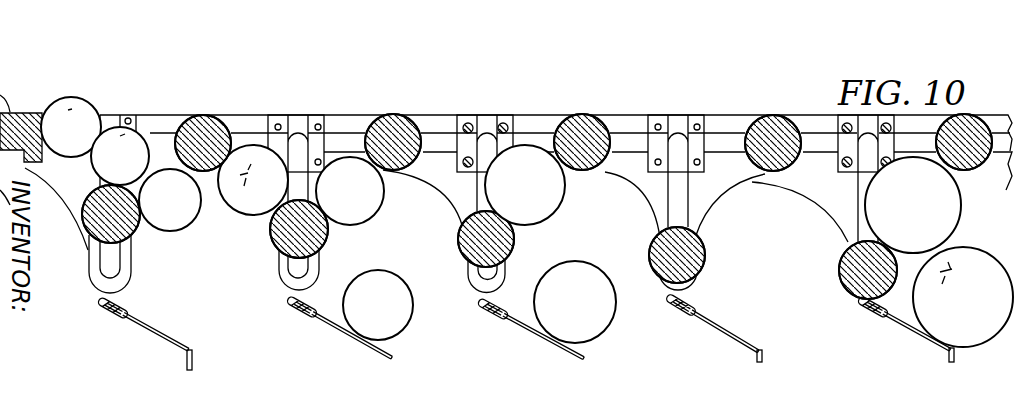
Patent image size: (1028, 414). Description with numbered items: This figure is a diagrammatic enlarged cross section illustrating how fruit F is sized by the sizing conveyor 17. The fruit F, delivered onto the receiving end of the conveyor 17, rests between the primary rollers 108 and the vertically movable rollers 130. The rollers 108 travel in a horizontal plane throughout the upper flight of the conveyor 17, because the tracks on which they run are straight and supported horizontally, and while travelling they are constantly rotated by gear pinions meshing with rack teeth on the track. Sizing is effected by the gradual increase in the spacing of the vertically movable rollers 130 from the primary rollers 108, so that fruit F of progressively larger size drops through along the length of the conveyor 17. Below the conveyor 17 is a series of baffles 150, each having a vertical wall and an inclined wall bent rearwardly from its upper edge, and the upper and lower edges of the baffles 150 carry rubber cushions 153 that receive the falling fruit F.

The sizing conveyor 17 is at (718, 84).
The primary rollers 108 is at (222, 96).
The vertically movable rollers 130 is at (100, 232).
The baffles 150 is at (180, 350).
The rubber cushions 153 is at (302, 312).
The fruit F is at (72, 105).